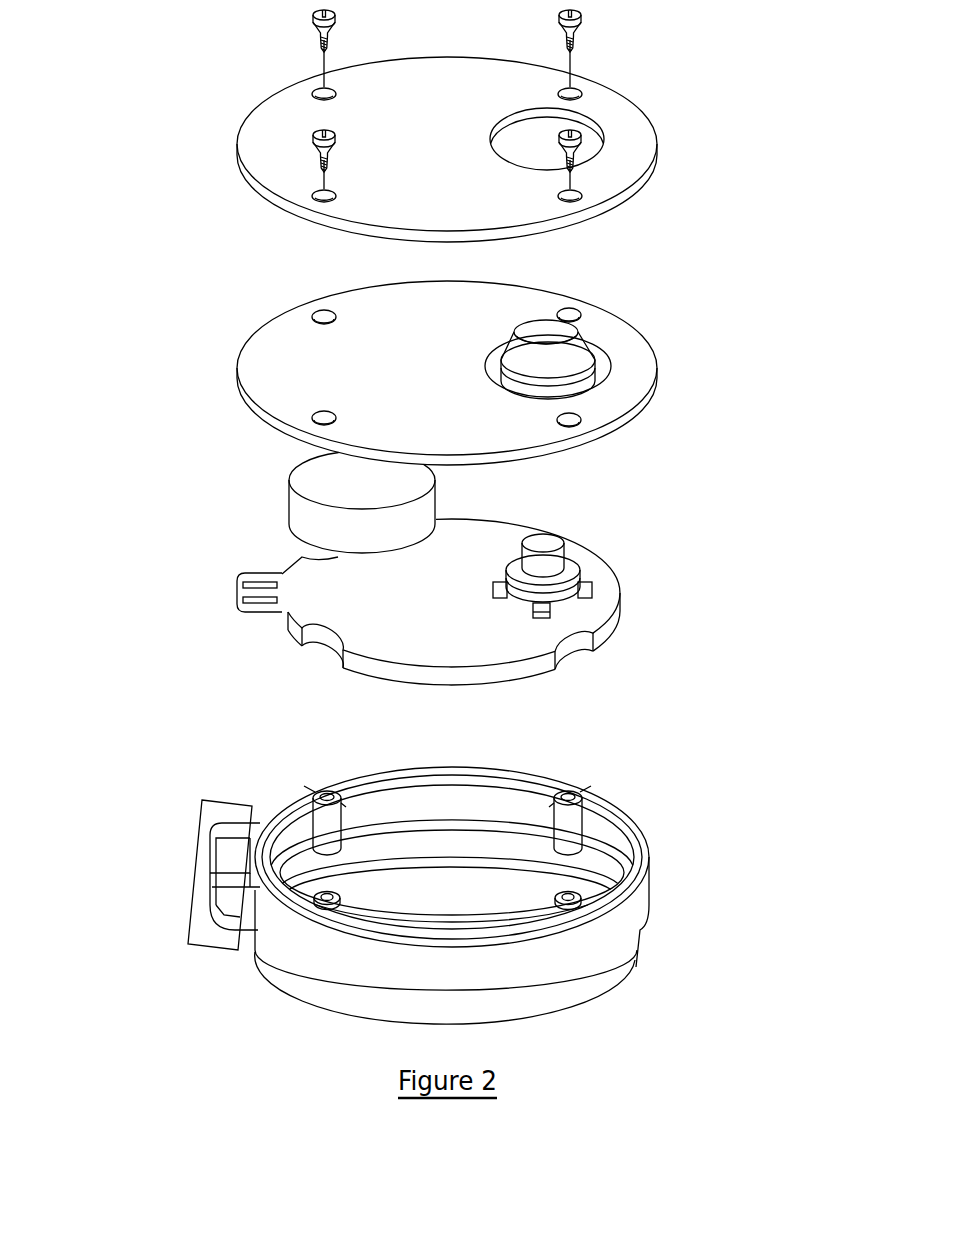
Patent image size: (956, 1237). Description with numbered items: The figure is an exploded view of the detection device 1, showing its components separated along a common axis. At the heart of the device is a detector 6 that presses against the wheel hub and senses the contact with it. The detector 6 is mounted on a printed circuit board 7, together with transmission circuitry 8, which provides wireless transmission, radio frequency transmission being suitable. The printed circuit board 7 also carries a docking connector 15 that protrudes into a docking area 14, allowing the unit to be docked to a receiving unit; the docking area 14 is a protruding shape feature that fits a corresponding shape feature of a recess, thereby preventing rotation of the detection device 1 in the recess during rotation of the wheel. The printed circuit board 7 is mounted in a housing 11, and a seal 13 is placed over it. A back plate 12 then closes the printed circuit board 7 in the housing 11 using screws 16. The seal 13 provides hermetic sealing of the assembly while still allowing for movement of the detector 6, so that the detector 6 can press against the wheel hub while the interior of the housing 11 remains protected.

The detection device 1 is at (637, 290).
The detector 6 is at (545, 545).
The printed circuit board 7 is at (590, 612).
The transmission circuitry 8 is at (316, 475).
The housing 11 is at (623, 922).
The back plate 12 is at (272, 163).
The seal 13 is at (270, 360).
The docking area 14 is at (196, 873).
The docking connector 15 is at (263, 592).
The screws 16 is at (316, 132).